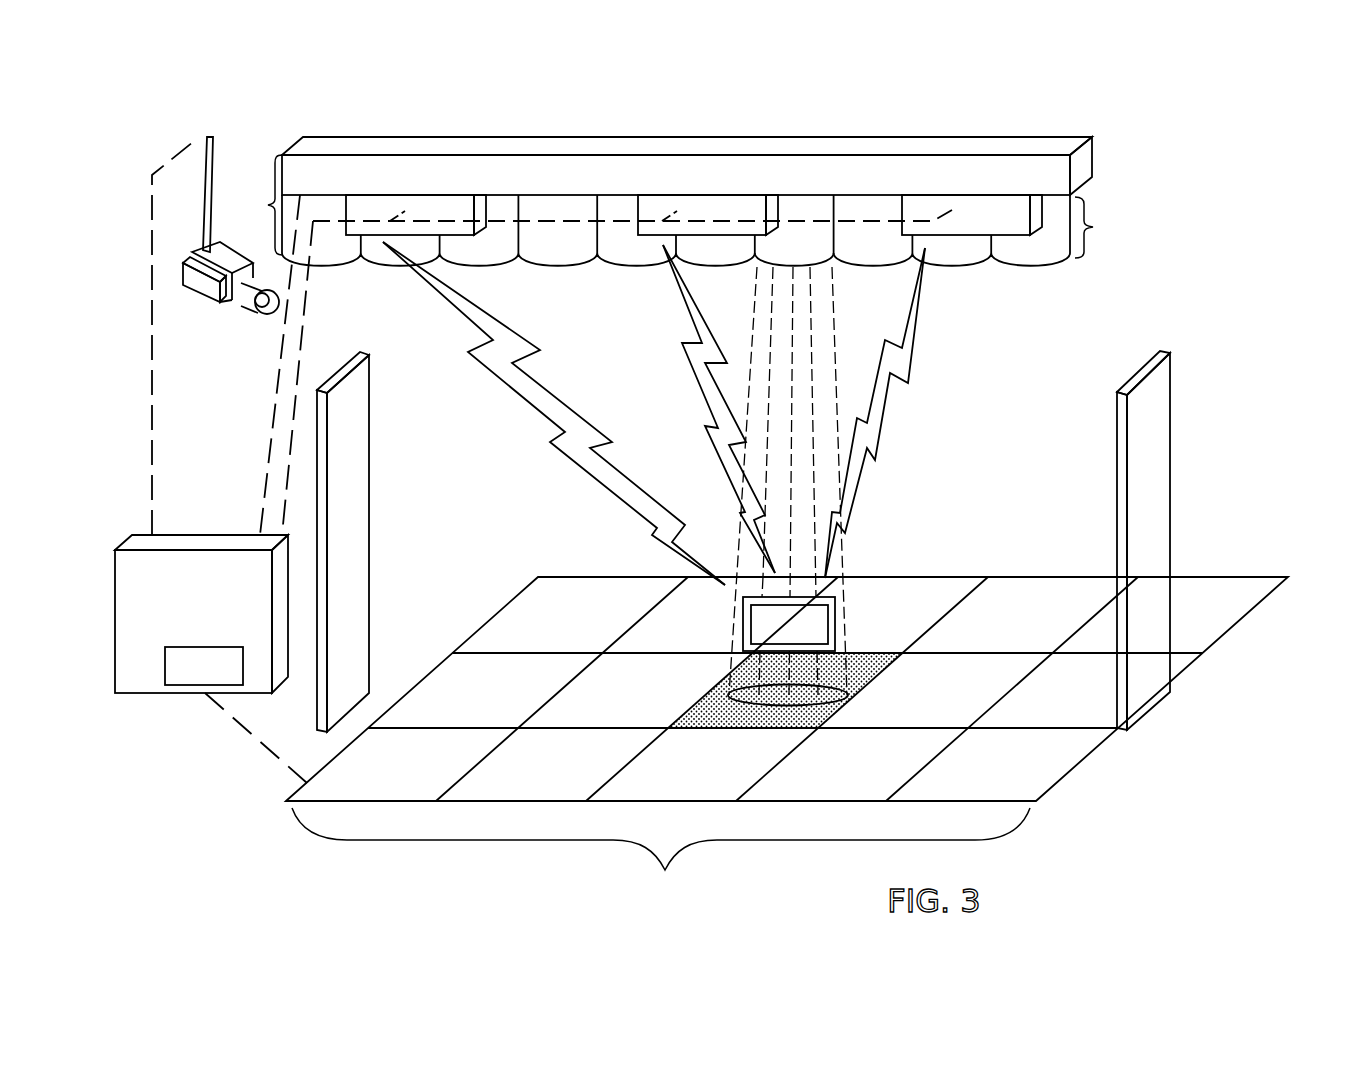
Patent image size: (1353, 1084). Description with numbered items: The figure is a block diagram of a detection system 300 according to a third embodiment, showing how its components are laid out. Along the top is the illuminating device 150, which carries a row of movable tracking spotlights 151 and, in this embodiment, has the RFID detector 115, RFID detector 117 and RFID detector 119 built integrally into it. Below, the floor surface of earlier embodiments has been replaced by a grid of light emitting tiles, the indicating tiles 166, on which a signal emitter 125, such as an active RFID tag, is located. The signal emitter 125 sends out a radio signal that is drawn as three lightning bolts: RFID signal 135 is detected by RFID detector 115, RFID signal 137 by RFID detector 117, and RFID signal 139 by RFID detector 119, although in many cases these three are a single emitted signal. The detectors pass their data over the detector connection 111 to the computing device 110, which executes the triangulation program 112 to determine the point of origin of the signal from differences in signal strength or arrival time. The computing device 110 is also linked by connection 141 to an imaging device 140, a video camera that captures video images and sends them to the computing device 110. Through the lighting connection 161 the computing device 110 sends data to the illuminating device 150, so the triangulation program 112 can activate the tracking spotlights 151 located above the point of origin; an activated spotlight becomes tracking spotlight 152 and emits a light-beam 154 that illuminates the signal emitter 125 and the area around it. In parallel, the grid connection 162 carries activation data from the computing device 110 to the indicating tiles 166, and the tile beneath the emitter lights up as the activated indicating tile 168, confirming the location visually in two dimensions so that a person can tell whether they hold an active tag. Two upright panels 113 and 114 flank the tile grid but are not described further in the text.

The detection system 300 is at (1148, 112).
The illuminating device 150 is at (268, 205).
The tracking spotlights 151 is at (721, 250).
The RFID detector 115 is at (462, 228).
The RFID detector 117 is at (719, 228).
The RFID detector 119 is at (1017, 225).
The tracking spotlight 152 is at (818, 258).
The connection 141 is at (152, 333).
The imaging device 140 is at (211, 304).
The detector connection 111 is at (322, 320).
The lighting connection 161 is at (268, 441).
The computing device 110 is at (167, 621).
The triangulation program 112 is at (182, 678).
The left wall 113 is at (348, 542).
The right wall 114 is at (1157, 552).
The RFID signal 135 is at (540, 417).
The RFID signal 137 is at (700, 397).
The RFID signal 139 is at (882, 433).
The signal emitter 125 is at (808, 636).
The indicating tile 168 is at (868, 658).
The light-beam 154 is at (816, 695).
The grid connection 162 is at (255, 733).
The indicating tiles 166 is at (787, 738).